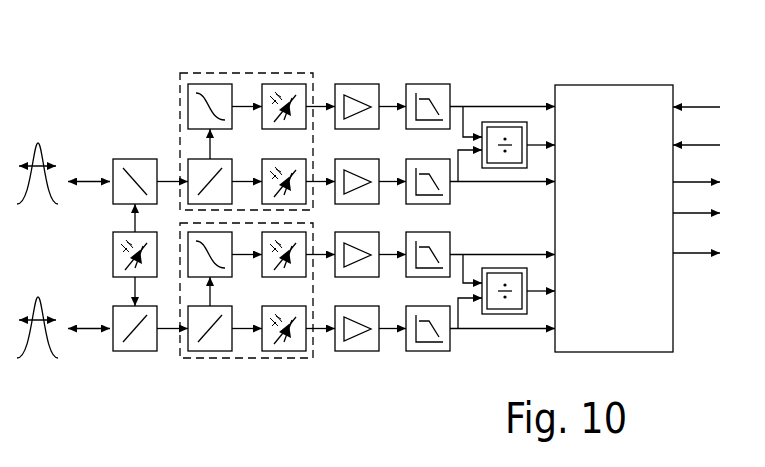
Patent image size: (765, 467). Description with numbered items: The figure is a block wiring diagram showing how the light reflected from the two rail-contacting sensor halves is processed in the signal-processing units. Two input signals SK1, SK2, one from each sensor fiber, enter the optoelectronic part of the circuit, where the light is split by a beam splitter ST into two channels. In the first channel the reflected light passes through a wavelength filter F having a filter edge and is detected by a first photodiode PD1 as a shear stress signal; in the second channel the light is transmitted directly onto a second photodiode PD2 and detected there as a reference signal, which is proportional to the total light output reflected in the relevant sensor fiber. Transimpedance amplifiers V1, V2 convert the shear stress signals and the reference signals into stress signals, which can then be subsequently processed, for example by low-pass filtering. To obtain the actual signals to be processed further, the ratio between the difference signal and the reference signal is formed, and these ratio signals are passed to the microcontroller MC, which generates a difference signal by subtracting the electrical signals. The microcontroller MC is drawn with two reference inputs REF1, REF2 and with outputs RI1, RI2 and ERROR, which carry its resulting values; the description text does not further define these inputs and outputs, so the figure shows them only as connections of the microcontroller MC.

The first spectral channel input signal SK1 is at (87, 176).
The second spectral channel input signal SK2 is at (87, 327).
The beam splitter ST is at (200, 170).
The wavelength filter F is at (216, 98).
The first photodiode PD1 is at (292, 97).
The second photodiode PD2 is at (284, 186).
The transimpedance amplifier V1 is at (367, 98).
The transimpedance amplifier V2 is at (370, 172).
The microcontroller MC is at (614, 218).
The first reference value input REF1 is at (702, 123).
The second reference value input REF2 is at (702, 160).
The first ratio output RI1 is at (699, 195).
The second ratio output RI2 is at (699, 229).
The error signal output ERROR is at (710, 269).